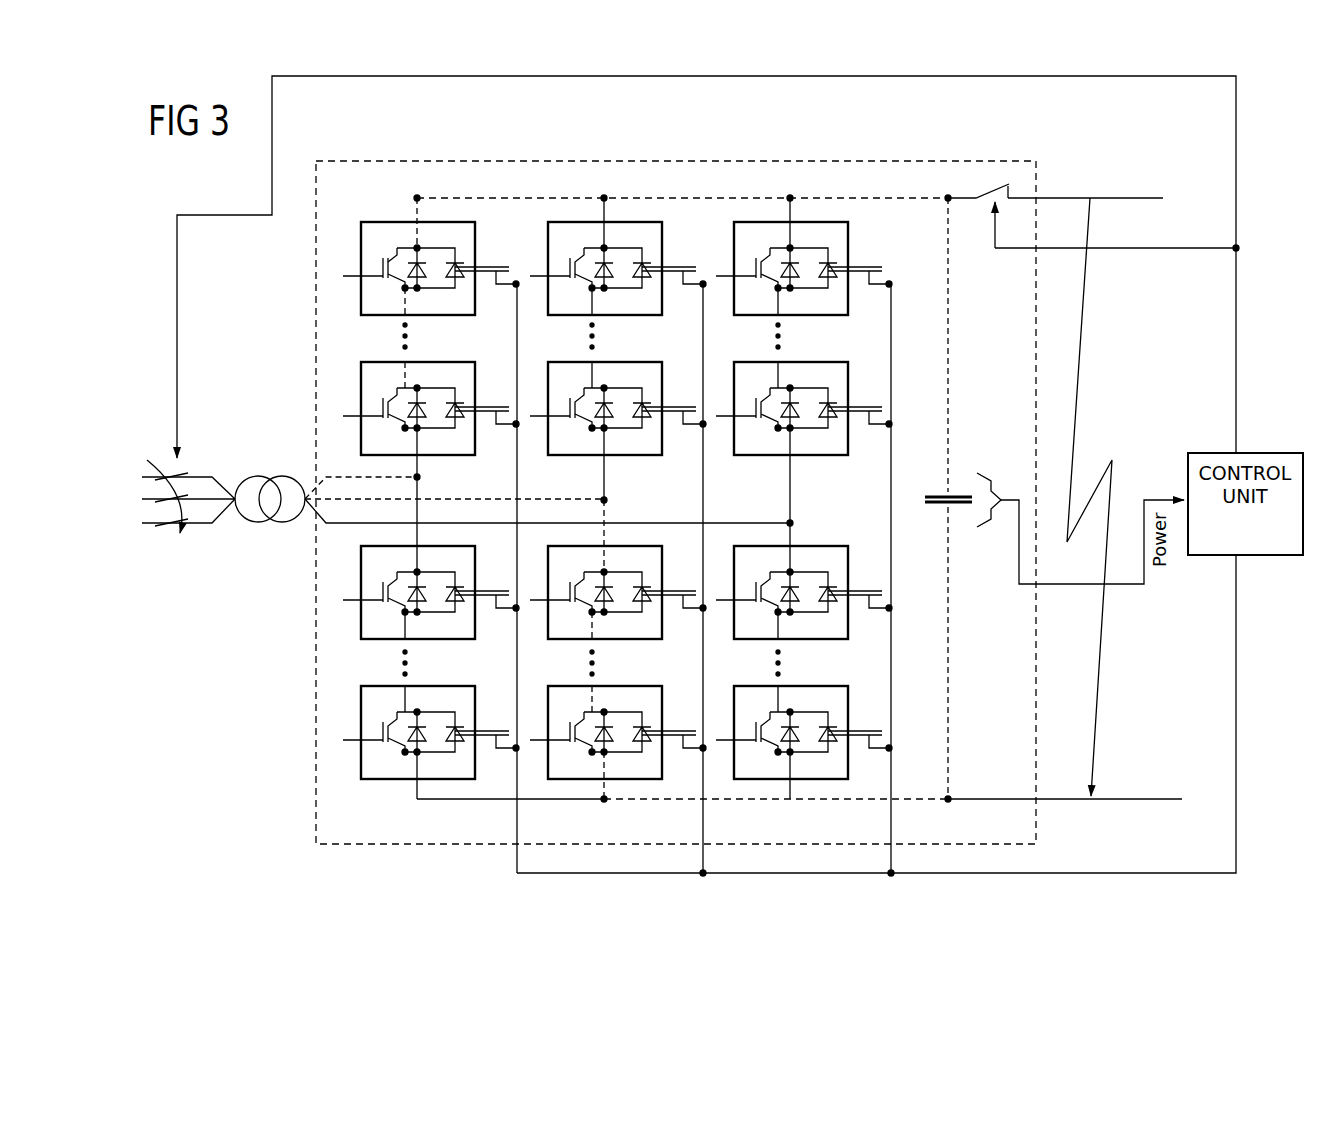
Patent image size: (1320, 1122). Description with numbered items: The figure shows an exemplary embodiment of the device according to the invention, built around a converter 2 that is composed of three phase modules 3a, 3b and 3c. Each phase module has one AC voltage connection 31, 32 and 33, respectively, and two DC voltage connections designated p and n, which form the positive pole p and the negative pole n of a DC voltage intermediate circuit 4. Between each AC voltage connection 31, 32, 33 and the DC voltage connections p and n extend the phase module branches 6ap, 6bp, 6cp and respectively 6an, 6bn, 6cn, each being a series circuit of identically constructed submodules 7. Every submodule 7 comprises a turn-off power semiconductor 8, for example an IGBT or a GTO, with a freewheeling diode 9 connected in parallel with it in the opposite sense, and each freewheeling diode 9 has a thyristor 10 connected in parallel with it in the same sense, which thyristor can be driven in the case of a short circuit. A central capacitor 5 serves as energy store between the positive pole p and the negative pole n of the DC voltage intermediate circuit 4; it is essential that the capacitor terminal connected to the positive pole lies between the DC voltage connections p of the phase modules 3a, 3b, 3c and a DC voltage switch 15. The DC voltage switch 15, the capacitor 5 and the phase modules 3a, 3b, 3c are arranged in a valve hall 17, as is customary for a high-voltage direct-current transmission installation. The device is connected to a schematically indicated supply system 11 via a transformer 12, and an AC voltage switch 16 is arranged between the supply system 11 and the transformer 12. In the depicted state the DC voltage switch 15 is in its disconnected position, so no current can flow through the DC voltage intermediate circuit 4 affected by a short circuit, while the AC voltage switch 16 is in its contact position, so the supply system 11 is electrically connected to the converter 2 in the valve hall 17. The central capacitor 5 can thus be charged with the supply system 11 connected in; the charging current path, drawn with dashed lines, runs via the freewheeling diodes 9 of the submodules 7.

The converter 2 is at (505, 136).
The phase module 3a is at (384, 480).
The phase module 3b is at (632, 480).
The phase module 3c is at (826, 480).
The AC voltage connection 31 is at (419, 477).
The AC voltage connection 32 is at (579, 486).
The AC voltage connection 33 is at (767, 502).
The DC voltage intermediate circuit 4 is at (1186, 194).
The central capacitor 5 is at (963, 469).
The phase module branch 6ap is at (384, 327).
The phase module branch 6an is at (378, 664).
The phase module branch 6bp is at (669, 246).
The phase module branch 6bn is at (610, 673).
The phase module branch 6cp is at (873, 250).
The phase module branch 6cn is at (798, 673).
The submodule 7 is at (423, 260).
The turn-off power semiconductor 8 is at (390, 290).
The freewheeling diode 9 is at (404, 250).
The thyristor 10 is at (463, 291).
The supply system 11 is at (136, 447).
The transformer 12 is at (262, 533).
The DC voltage switch 15 is at (972, 171).
The AC voltage switch 16 is at (172, 548).
The valve hall 17 is at (316, 800).
The positive DC voltage connection p is at (413, 186).
The negative DC voltage connection n is at (417, 799).